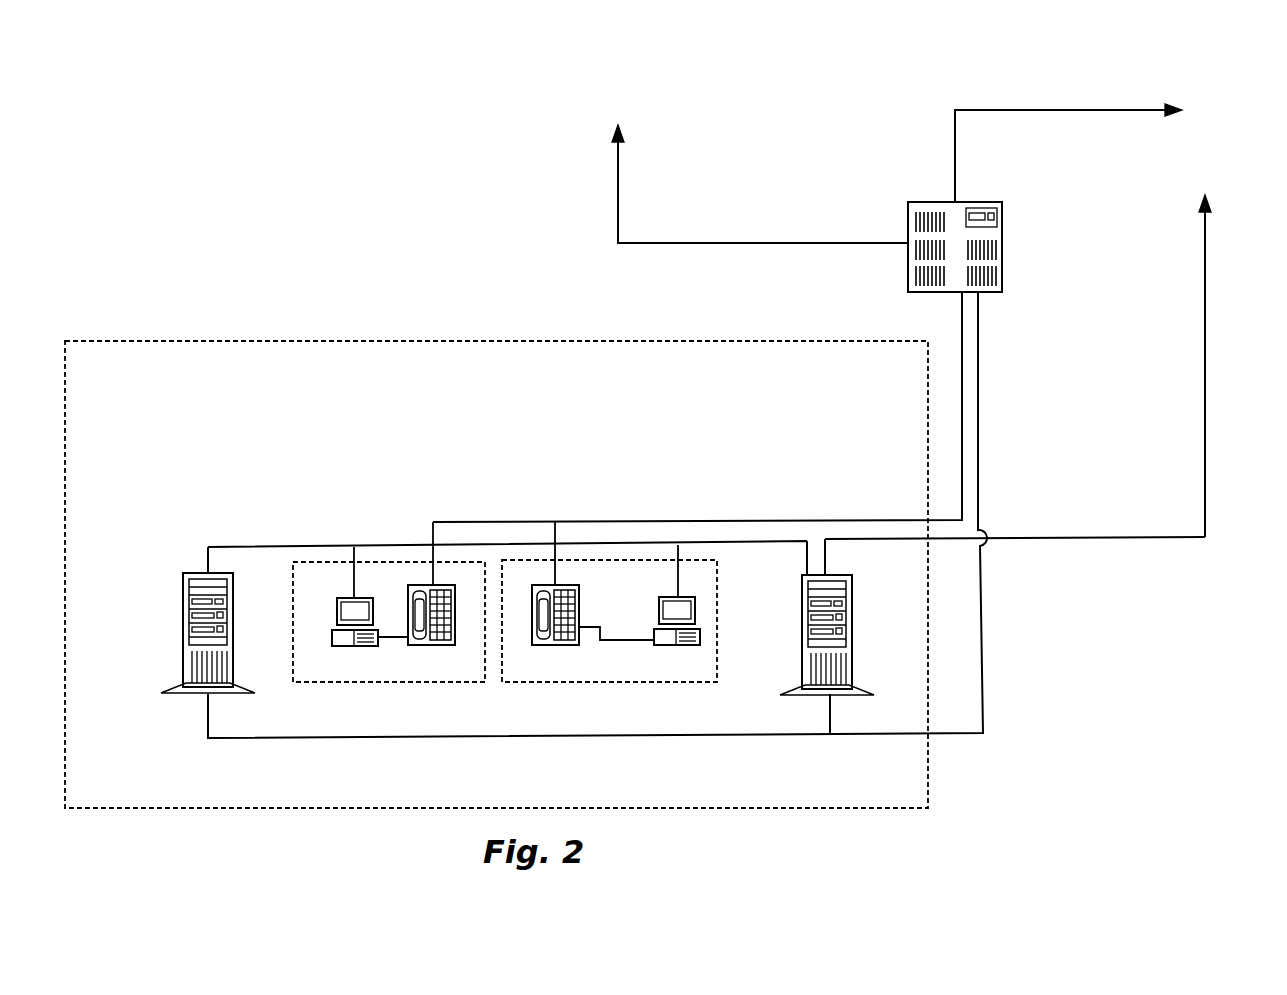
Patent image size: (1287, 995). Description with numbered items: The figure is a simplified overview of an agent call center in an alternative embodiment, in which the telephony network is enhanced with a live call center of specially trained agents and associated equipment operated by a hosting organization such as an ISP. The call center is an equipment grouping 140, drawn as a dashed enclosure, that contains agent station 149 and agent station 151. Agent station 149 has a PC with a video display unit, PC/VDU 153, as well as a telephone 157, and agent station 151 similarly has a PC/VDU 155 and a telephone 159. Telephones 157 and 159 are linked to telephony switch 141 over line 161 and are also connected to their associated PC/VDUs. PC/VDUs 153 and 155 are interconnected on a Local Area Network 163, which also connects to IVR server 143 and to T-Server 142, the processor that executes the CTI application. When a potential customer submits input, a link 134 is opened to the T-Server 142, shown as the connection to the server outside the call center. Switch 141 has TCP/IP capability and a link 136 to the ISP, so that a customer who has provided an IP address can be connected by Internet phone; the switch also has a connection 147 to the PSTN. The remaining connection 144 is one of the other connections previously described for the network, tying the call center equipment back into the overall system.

The equipment grouping 140 is at (150, 322).
The telephony switch 141 is at (935, 202).
The link 136 is at (1087, 112).
The link 134 is at (1205, 378).
The connection to PSTN 147 is at (620, 217).
The line 161 is at (878, 520).
The Local Area Network (LAN) 163 is at (410, 546).
The connection 144 is at (985, 560).
The IVR server 143 is at (183, 628).
The T-Server 142 is at (800, 640).
The agent station 149 is at (425, 683).
The agent station 151 is at (620, 683).
The PC/VDU 153 is at (332, 637).
The PC/VDU 155 is at (654, 637).
The telephone 157 is at (440, 585).
The telephone 159 is at (565, 585).